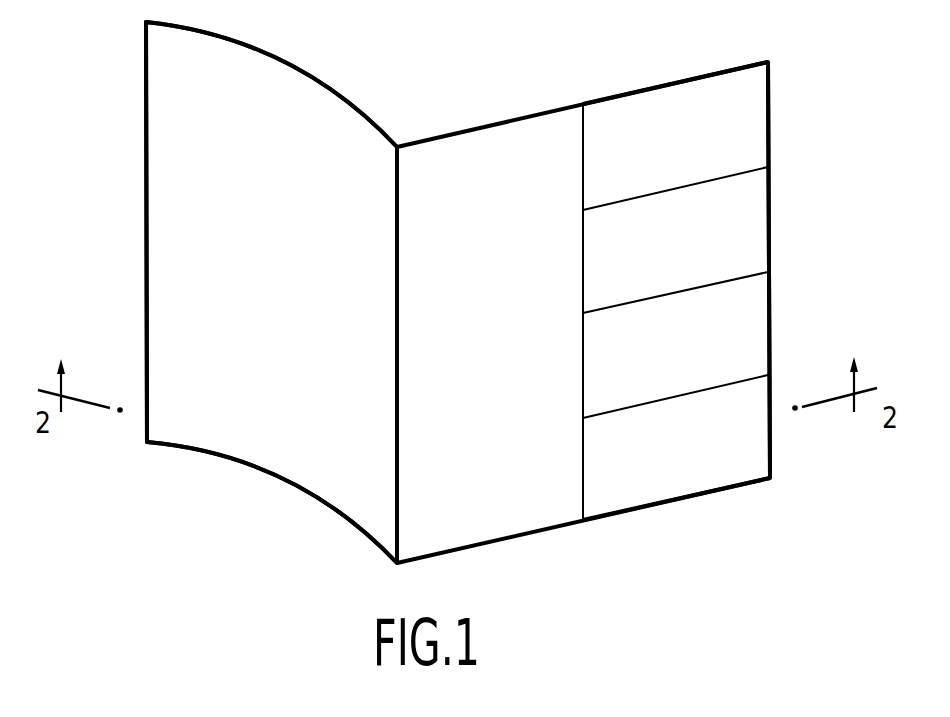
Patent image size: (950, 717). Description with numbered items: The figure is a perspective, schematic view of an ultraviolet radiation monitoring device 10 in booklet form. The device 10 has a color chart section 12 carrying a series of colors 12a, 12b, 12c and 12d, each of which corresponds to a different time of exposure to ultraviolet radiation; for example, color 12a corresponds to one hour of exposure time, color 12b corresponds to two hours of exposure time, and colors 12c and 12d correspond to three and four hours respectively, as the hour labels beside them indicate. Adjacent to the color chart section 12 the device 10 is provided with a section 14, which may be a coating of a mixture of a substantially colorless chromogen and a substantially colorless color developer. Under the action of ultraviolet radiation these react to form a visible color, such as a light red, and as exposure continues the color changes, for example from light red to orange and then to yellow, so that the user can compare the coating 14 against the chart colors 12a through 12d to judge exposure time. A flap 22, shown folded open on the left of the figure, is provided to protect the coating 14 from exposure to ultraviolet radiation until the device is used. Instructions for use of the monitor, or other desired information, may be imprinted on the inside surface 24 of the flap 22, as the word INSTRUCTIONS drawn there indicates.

The ultraviolet radiation monitoring device 10 is at (518, 88).
The color chart section 12 is at (676, 270).
The color 12a is at (745, 133).
The color 12b is at (745, 240).
The color 12c is at (745, 343).
The color 12d is at (745, 448).
The section 14 is at (497, 385).
The flap 22 is at (208, 434).
The inside surface 24 is at (277, 140).